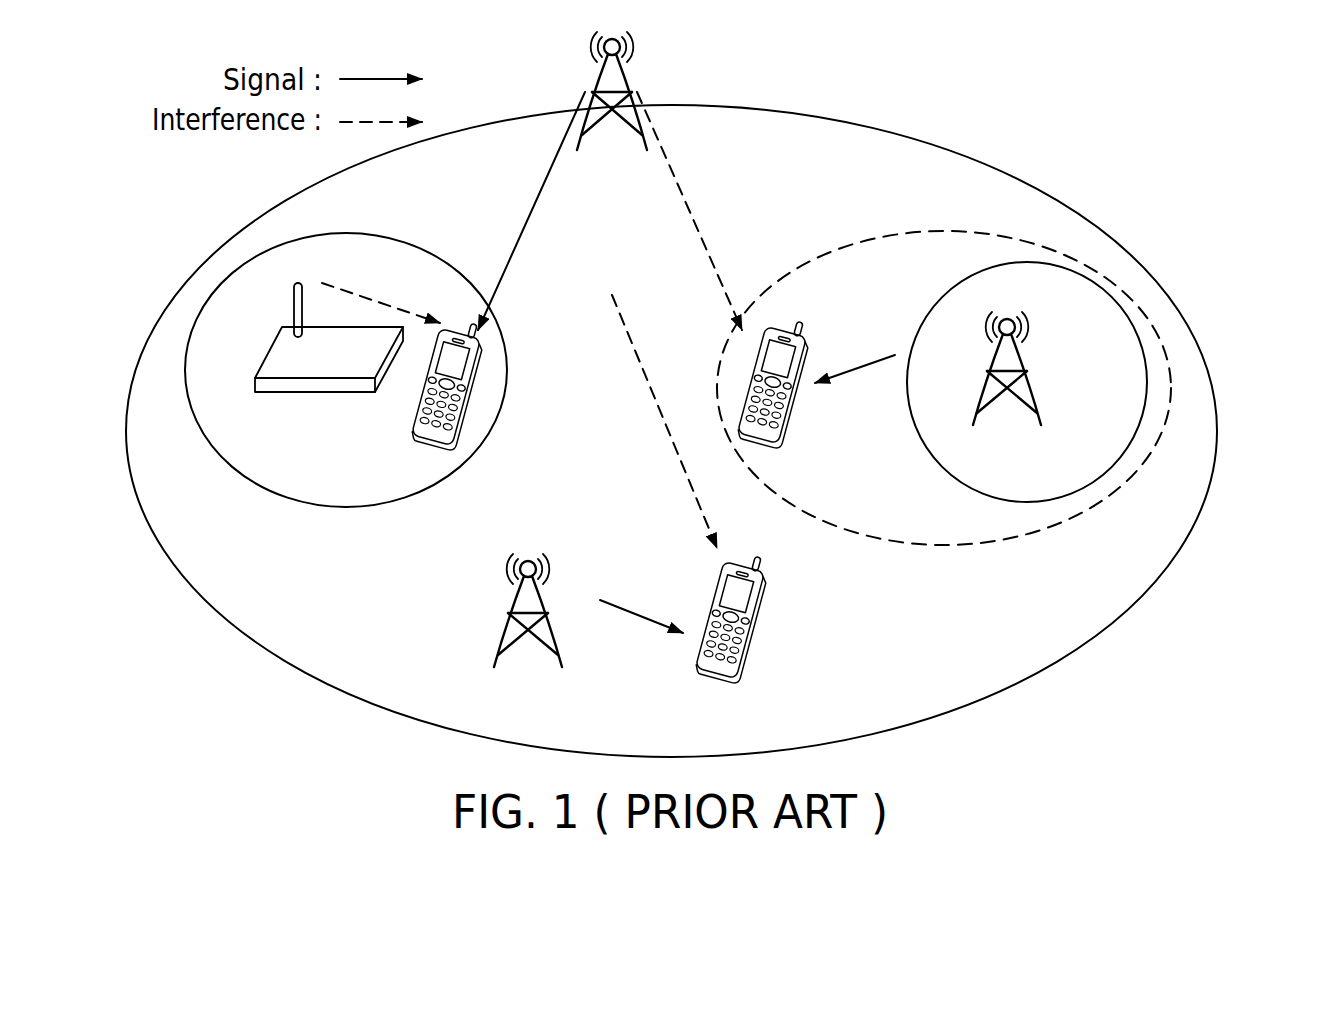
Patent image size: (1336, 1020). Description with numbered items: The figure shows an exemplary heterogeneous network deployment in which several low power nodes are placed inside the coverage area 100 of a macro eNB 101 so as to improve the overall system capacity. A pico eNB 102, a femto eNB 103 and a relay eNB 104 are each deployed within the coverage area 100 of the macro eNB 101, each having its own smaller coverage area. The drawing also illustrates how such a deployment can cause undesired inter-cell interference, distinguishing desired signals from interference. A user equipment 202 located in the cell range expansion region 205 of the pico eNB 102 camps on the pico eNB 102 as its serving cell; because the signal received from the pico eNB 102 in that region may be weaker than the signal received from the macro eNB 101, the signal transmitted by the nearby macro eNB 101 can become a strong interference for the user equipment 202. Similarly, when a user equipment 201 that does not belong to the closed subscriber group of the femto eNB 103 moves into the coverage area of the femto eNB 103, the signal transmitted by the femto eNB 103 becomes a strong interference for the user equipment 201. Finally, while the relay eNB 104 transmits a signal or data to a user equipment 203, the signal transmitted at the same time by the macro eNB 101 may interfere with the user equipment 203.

The coverage area 100 is at (1218, 428).
The macro evolved node B (eNB) 101 is at (641, 45).
The pico eNB 102 is at (1043, 393).
The femto eNB 103 is at (266, 345).
The relay eNB 104 is at (507, 612).
The user equipment 201 is at (480, 392).
The user equipment 202 is at (780, 440).
The user equipment 203 is at (762, 620).
The cell range expansion (CRE) region 205 is at (882, 309).